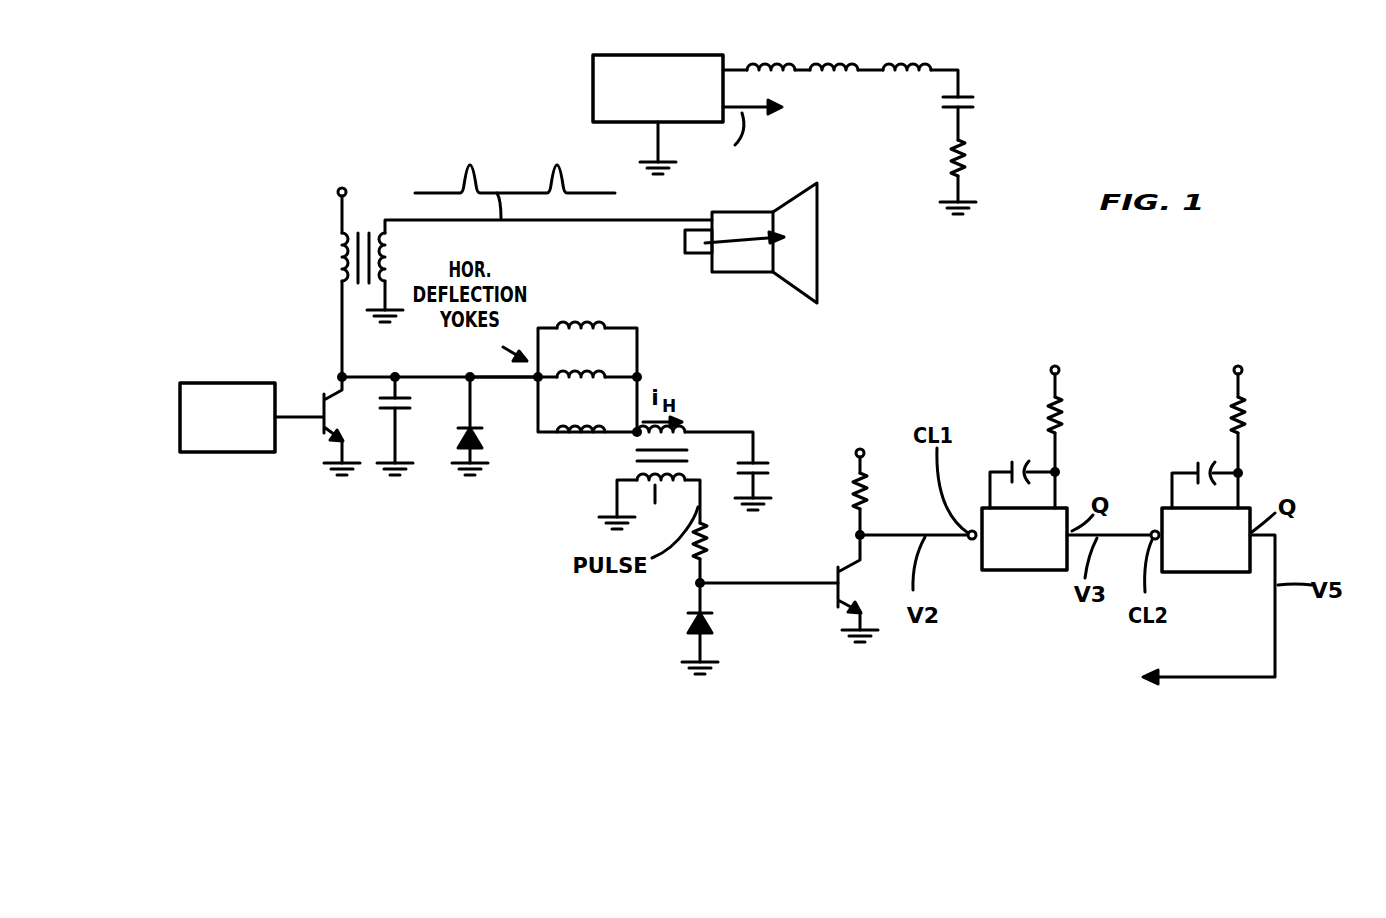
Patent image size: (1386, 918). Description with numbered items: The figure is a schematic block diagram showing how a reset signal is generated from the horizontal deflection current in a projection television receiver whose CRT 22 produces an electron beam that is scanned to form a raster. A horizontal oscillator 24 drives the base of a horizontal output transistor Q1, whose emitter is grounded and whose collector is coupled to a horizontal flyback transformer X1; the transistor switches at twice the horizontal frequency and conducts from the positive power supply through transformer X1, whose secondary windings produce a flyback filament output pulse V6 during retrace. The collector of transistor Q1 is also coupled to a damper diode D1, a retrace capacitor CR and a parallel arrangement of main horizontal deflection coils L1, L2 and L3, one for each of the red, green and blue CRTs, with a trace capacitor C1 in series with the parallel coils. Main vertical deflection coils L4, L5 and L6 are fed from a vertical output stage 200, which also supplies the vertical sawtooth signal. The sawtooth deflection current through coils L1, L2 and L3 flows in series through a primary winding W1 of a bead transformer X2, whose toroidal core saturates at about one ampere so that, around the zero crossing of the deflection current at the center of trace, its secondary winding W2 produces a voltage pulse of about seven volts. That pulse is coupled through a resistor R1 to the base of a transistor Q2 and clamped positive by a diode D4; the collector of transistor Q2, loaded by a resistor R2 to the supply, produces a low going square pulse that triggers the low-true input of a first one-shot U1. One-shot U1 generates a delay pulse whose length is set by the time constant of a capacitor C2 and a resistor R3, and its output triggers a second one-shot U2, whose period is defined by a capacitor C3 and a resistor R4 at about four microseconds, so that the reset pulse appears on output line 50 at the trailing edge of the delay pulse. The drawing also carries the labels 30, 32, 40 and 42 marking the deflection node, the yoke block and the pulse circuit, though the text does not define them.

The vertical output stage 200 is at (594, 55).
The CRT 22 is at (818, 243).
The horizontal oscillator 24 is at (198, 452).
The junction terminal 30 is at (504, 395).
The horizontal deflection yokes 32 is at (579, 375).
The pulse generator circuit 40 is at (612, 627).
The transformer core 42 is at (637, 462).
The line 50 is at (1213, 679).
The horizontal output transistor Q1 is at (322, 426).
The transistor Q2 is at (862, 588).
The resistor R1 is at (715, 552).
The load resistor R2 is at (875, 492).
The resistor R3 is at (1070, 422).
The resistor R4 is at (1248, 422).
The trace capacitor C1 is at (745, 471).
The capacitor C2 is at (1020, 455).
The capacitor C3 is at (1201, 455).
The retrace capacitor CR is at (407, 423).
The damper diode D1 is at (486, 423).
The diode D4 is at (684, 628).
The main horizontal deflection coil L1 is at (581, 313).
The main horizontal deflection coil L2 is at (581, 363).
The main horizontal deflection coil L3 is at (581, 418).
The main vertical deflection coil L4 is at (770, 51).
The main vertical deflection coil L5 is at (834, 51).
The main vertical deflection coil L6 is at (907, 51).
The first one-shot U1 is at (1035, 571).
The second one-shot U2 is at (1190, 573).
The horizontal flyback transformer X1 is at (383, 272).
The bead transformer X2 is at (657, 512).
The primary winding W1 is at (633, 442).
The secondary winding W2 is at (683, 476).
The flyback filament output pulse V6 is at (391, 214).